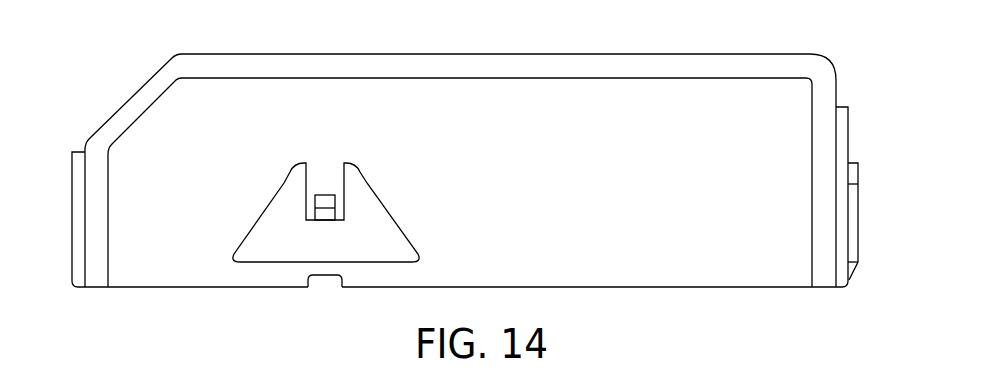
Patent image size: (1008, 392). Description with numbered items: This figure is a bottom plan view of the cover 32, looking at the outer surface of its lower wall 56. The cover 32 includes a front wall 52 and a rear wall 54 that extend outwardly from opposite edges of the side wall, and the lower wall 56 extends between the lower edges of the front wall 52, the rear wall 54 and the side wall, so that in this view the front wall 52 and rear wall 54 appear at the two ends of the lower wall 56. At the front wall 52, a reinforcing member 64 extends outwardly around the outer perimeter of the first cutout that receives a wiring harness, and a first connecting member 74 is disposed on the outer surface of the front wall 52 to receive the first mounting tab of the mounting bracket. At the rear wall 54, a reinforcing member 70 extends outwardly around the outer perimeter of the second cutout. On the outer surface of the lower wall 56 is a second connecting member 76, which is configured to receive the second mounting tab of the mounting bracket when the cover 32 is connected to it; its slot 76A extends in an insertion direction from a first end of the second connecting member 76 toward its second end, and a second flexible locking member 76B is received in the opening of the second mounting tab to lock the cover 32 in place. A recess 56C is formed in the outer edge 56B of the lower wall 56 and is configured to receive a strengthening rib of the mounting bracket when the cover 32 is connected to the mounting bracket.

The cover 32 is at (247, 48).
The front wall 52 is at (838, 122).
The rear wall 54 is at (82, 195).
The lower wall 56 is at (157, 248).
The outer edge 56B is at (704, 287).
The recess 56C is at (327, 276).
The reinforcing member 64 is at (849, 143).
The reinforcing member 70 is at (72, 247).
The first connecting member 74 is at (859, 227).
The second connecting member 76 is at (392, 213).
The slot 76A is at (263, 262).
The second flexible locking member 76B is at (320, 195).